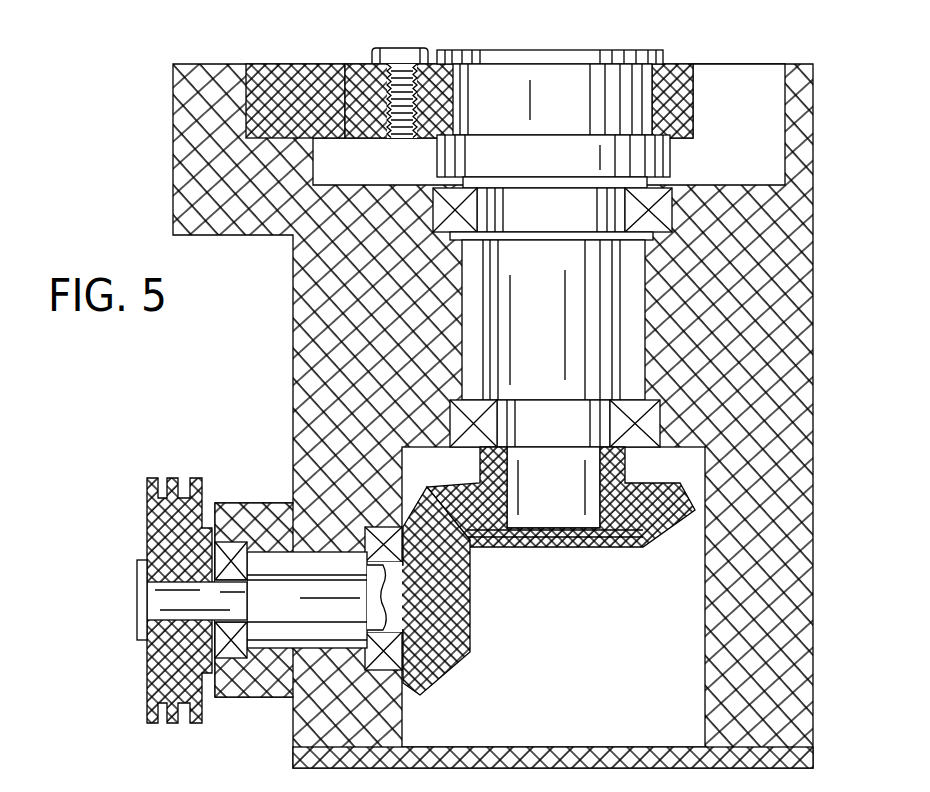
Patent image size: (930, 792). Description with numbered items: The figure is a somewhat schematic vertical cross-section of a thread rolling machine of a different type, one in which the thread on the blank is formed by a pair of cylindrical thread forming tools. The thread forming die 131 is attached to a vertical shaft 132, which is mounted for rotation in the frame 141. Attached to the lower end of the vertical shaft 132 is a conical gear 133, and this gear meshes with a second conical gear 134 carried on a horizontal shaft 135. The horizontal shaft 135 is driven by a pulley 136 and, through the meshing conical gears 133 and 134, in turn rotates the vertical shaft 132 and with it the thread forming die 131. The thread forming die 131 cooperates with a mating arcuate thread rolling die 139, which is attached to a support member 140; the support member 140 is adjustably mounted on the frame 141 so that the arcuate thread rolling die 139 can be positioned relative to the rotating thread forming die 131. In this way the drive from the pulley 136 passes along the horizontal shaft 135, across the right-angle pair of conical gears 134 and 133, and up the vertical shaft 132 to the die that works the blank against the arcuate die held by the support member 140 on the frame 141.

The thread forming die 131 is at (673, 67).
The vertical shaft 132 is at (553, 94).
The conical gear 133 is at (670, 543).
The second conical gear 134 is at (440, 677).
The horizontal shaft 135 is at (157, 600).
The pulley 136 is at (153, 528).
The arcuate thread rolling die 139 is at (360, 80).
The support member 140 is at (283, 68).
The frame 141 is at (337, 387).